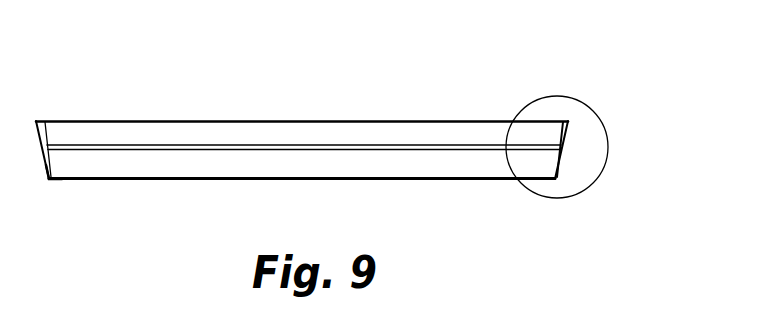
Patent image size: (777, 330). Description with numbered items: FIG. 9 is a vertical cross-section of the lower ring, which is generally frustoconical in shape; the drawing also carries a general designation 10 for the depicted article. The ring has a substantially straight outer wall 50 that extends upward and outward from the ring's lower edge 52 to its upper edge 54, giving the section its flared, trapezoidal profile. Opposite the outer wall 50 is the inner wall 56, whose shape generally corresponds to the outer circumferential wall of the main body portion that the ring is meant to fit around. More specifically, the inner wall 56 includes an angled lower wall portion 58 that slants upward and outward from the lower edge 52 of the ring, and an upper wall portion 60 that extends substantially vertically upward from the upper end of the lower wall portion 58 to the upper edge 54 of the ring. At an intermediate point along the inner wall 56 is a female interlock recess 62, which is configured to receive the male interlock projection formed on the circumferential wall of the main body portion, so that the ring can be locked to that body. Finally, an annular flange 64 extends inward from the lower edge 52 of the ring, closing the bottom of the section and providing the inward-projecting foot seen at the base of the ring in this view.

The lighting fixture assembly 10 is at (597, 113).
The outer wall 50 is at (558, 157).
The lower edge 52 is at (420, 182).
The upper edge 54 is at (313, 121).
The inner wall 56 is at (560, 137).
The lower wall portion 58 is at (50, 157).
The upper wall portion 60 is at (45, 131).
The female interlock recess 62 is at (100, 148).
The annular flange 64 is at (60, 182).